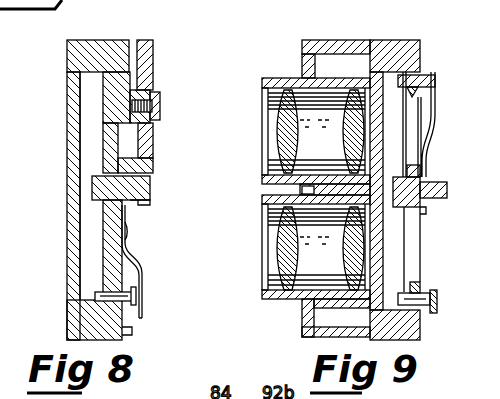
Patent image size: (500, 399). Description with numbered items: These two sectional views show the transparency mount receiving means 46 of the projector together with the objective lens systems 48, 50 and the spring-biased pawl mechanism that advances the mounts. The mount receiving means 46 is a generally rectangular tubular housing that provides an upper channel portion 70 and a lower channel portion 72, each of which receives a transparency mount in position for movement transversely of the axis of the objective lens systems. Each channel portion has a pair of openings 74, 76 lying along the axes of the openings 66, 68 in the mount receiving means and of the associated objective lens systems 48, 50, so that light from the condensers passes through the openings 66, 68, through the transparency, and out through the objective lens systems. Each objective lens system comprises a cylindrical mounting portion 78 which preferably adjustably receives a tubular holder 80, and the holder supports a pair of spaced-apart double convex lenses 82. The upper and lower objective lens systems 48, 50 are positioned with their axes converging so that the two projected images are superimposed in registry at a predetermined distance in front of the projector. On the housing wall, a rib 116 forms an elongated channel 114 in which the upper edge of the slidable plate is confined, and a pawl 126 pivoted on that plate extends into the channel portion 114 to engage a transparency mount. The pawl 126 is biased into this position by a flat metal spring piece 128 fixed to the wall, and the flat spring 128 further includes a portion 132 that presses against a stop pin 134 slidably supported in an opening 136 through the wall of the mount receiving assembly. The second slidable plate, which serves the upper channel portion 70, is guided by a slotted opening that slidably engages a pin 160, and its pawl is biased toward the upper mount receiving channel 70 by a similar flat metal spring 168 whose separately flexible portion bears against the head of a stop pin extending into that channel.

In FIG. 9, the mount receiving means 46 is at (395, 40).
In FIG. 9, the objective lens system 48 is at (262, 80).
In FIG. 9, the objective lens system 50 is at (262, 296).
In FIG. 9, the opening 66 is at (432, 105).
In FIG. 9, the opening 68 is at (424, 211).
In FIG. 8, the upper channel portion 70 is at (90, 108).
In FIG. 9, the upper channel portion 70 is at (395, 70).
In FIG. 8, the lower channel portion 72 is at (90, 255).
In FIG. 9, the lower channel portion 72 is at (410, 278).
In FIG. 9, the opening 74 is at (376, 158).
In FIG. 9, the opening 76 is at (376, 222).
In FIG. 9, the cylindrical mounting portion 78 is at (328, 72).
In FIG. 9, the tubular holder 80 is at (280, 78).
In FIG. 9, the double convex lenses 82 is at (345, 152).
In FIG. 8, the elongated channel 114 is at (135, 197).
In FIG. 9, the elongated channel 114 is at (423, 174).
In FIG. 8, the rib 116 is at (150, 188).
In FIG. 9, the rib 116 is at (447, 189).
In FIG. 9, the pawl 126 is at (437, 311).
In FIG. 9, the flat metal spring piece 128 is at (438, 296).
In FIG. 8, the portion 132 is at (142, 300).
In FIG. 8, the stop pin 134 is at (95, 298).
In FIG. 8, the opening 136 is at (130, 327).
In FIG. 8, the pin 160 is at (157, 96).
In FIG. 9, the flat metal spring 168 is at (437, 80).